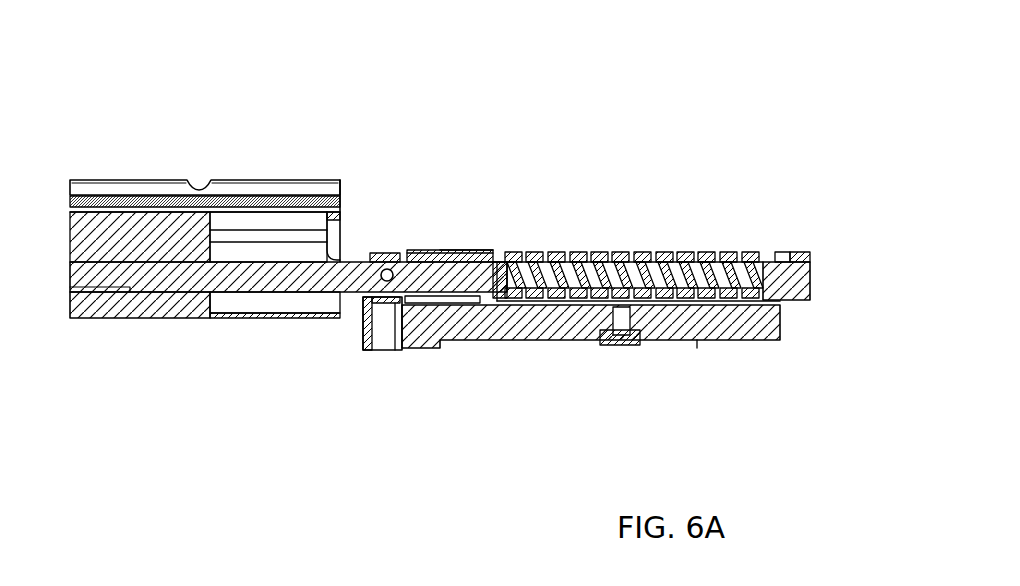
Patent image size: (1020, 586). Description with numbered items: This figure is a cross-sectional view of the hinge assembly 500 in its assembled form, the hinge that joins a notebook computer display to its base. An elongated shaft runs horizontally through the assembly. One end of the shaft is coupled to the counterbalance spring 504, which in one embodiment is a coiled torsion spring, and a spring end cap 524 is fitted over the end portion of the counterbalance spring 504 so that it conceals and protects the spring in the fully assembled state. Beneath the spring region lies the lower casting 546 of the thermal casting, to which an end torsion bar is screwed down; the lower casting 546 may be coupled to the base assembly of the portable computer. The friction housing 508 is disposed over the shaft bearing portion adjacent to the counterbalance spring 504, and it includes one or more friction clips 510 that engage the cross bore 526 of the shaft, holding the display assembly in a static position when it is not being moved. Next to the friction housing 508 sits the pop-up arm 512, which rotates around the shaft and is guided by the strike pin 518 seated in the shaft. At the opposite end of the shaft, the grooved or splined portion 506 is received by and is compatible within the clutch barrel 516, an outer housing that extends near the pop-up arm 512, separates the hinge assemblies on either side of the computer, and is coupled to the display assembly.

The hinge assembly 500 is at (160, 44).
The counterbalance spring 504 is at (670, 258).
The grooved or splined portion 506 is at (155, 280).
The friction housing 508 is at (493, 257).
The friction clips 510 is at (422, 255).
The pop-up arm 512 is at (373, 253).
The clutch barrel 516 is at (243, 185).
The strike pin 518 is at (383, 278).
The spring end cap 524 is at (805, 260).
The cross bore 526 is at (463, 257).
The lower casting 546 is at (498, 325).